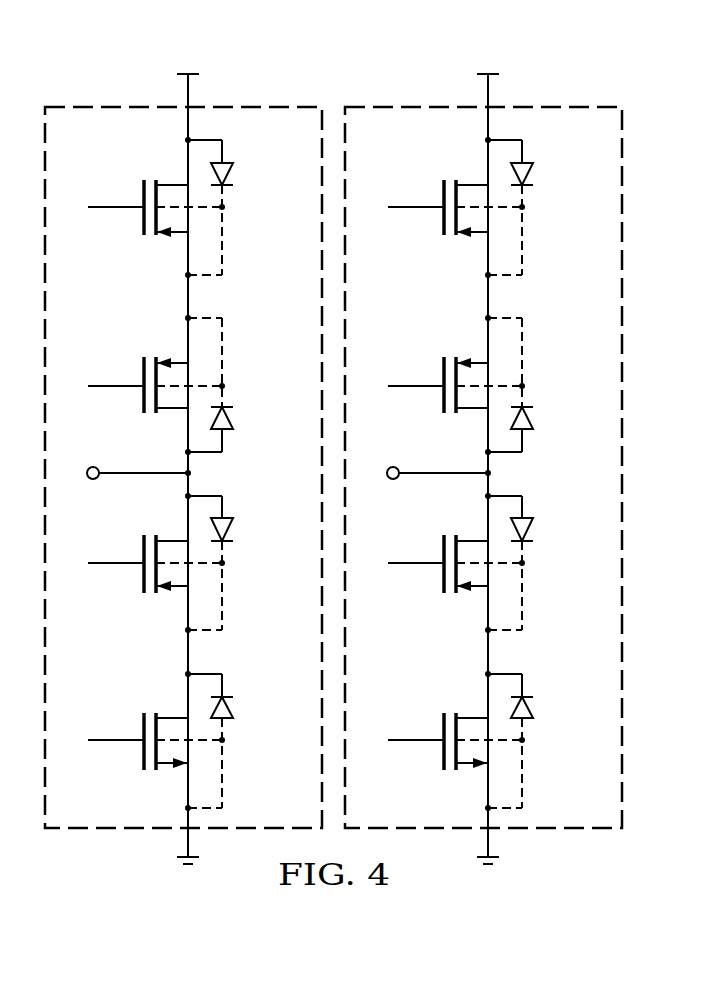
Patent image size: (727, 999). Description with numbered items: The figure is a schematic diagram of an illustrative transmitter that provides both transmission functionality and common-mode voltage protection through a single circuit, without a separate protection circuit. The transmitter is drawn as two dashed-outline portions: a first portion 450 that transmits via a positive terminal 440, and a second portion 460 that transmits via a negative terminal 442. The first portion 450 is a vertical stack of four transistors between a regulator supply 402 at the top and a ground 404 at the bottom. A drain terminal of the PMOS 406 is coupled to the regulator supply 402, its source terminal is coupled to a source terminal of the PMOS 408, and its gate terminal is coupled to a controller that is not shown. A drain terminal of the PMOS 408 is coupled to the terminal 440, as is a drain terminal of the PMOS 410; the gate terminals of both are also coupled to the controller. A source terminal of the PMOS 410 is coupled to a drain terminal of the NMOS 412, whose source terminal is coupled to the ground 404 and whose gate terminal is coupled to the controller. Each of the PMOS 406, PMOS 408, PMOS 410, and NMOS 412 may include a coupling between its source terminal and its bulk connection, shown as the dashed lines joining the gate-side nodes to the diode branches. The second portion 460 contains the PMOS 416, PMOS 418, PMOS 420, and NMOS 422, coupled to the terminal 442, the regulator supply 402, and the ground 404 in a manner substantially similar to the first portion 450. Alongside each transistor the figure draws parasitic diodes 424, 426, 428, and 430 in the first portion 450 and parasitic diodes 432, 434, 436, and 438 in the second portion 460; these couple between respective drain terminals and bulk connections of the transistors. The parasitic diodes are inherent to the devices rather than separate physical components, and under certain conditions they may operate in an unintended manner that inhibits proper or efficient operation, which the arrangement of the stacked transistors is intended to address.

The regulator supply 402 is at (185, 72).
The ground 404 is at (188, 872).
The PMOS 406 is at (142, 195).
The PMOS 408 is at (142, 372).
The PMOS 410 is at (142, 573).
The NMOS 412 is at (142, 752).
The PMOS 416 is at (442, 195).
The PMOS 418 is at (442, 372).
The PMOS 420 is at (442, 573).
The NMOS 422 is at (442, 752).
The parasitic diode 424 is at (233, 172).
The parasitic diode 426 is at (233, 412).
The parasitic diode 428 is at (233, 526).
The parasitic diode 430 is at (233, 700).
The parasitic diode 432 is at (533, 172).
The parasitic diode 434 is at (533, 412).
The parasitic diode 436 is at (533, 526).
The parasitic diode 438 is at (533, 700).
The positive terminal 440 is at (93, 466).
The negative terminal 442 is at (393, 466).
The first portion 450 is at (124, 102).
The second portion 460 is at (542, 102).